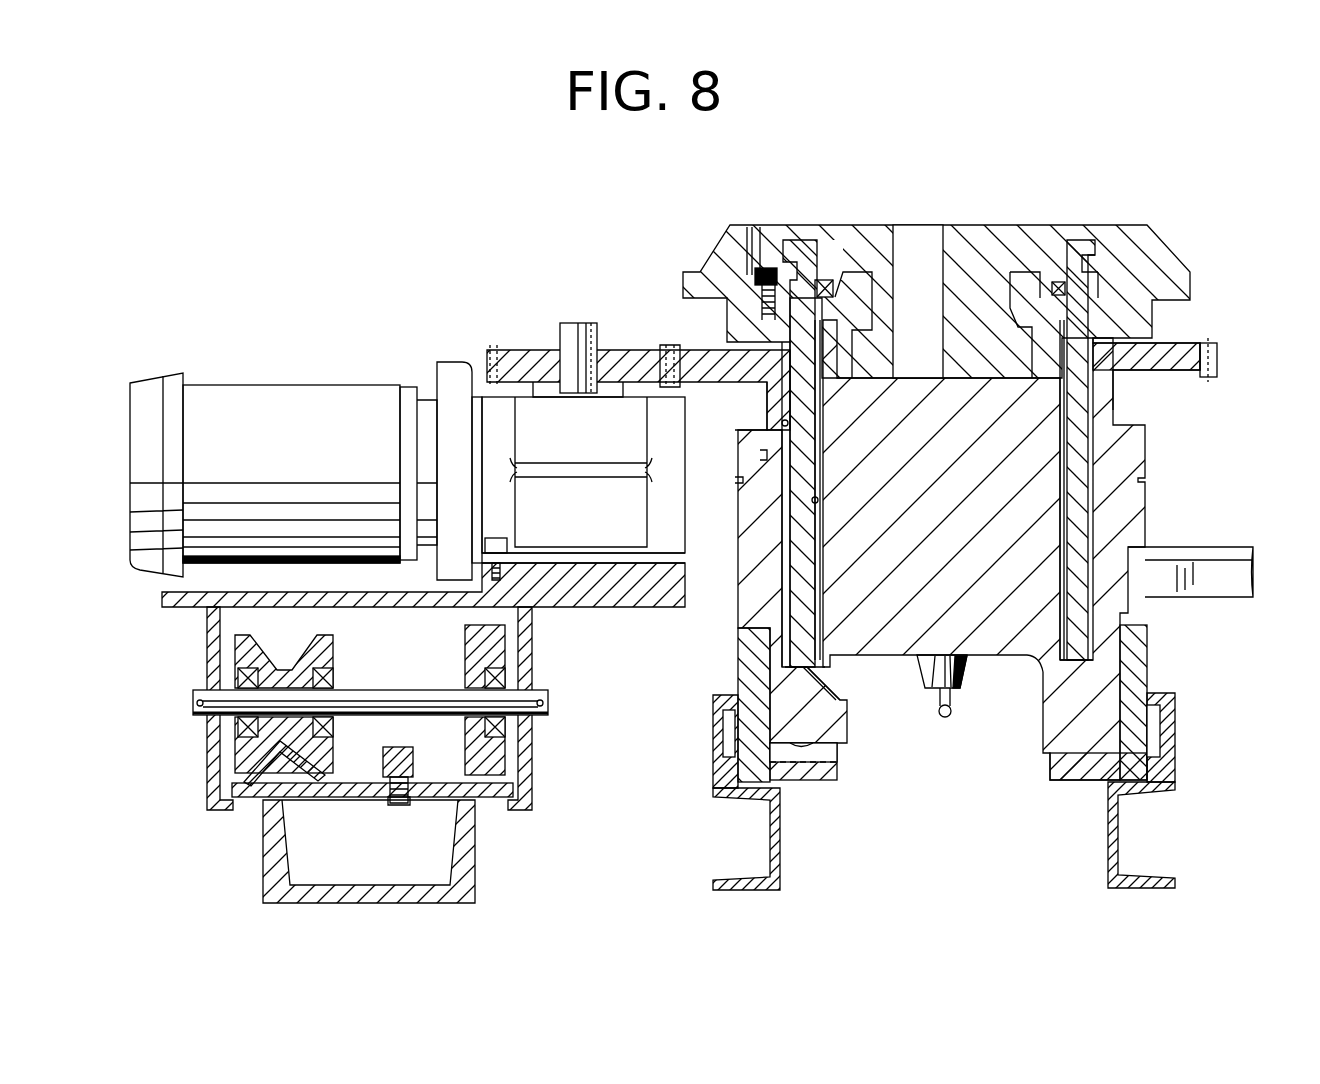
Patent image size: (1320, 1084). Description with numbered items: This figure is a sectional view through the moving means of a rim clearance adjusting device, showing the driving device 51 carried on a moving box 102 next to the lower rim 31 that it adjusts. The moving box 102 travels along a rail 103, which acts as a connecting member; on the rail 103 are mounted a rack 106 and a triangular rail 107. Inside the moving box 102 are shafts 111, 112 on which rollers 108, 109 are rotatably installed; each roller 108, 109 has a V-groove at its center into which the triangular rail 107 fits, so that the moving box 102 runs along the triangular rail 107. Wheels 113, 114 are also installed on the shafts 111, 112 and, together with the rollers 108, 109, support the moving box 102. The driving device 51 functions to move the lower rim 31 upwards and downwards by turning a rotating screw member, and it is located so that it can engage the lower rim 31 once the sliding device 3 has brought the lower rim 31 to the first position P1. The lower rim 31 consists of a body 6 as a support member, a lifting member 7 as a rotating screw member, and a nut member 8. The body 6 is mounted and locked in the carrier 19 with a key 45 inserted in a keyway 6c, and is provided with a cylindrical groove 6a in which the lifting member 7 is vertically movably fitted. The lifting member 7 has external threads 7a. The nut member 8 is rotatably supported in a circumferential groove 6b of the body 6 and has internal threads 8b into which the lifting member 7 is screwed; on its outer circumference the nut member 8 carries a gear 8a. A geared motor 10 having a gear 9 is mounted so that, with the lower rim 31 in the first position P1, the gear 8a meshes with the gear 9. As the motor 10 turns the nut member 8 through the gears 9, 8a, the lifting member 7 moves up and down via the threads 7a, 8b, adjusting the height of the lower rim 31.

The sliding device 3 is at (783, 830).
The body 6 is at (950, 538).
The cylindrical groove 6a is at (816, 500).
The circumferential groove 6b is at (777, 458).
The keyway 6c is at (813, 742).
The lifting member 7 is at (797, 245).
The external threads 7a is at (786, 423).
The nut member 8 is at (697, 350).
The gear 8a is at (667, 350).
The internal threads 8b is at (768, 407).
The gear 9 is at (533, 355).
The geared motor 10 is at (306, 471).
The carrier 19 is at (1147, 658).
The lower rim 31 is at (966, 212).
The key 45 is at (843, 757).
The driving device 51 is at (593, 225).
The moving box 102 is at (147, 603).
The rail 103 is at (427, 912).
The rack 106 is at (383, 763).
The triangular rail 107 is at (323, 773).
The roller 108 is at (327, 647).
The roller 109 is at (327, 704).
The shaft 111 is at (200, 688).
The shaft 112 is at (330, 684).
The wheel 113 is at (540, 640).
The wheel 114 is at (547, 700).
The first position P1 is at (951, 720).